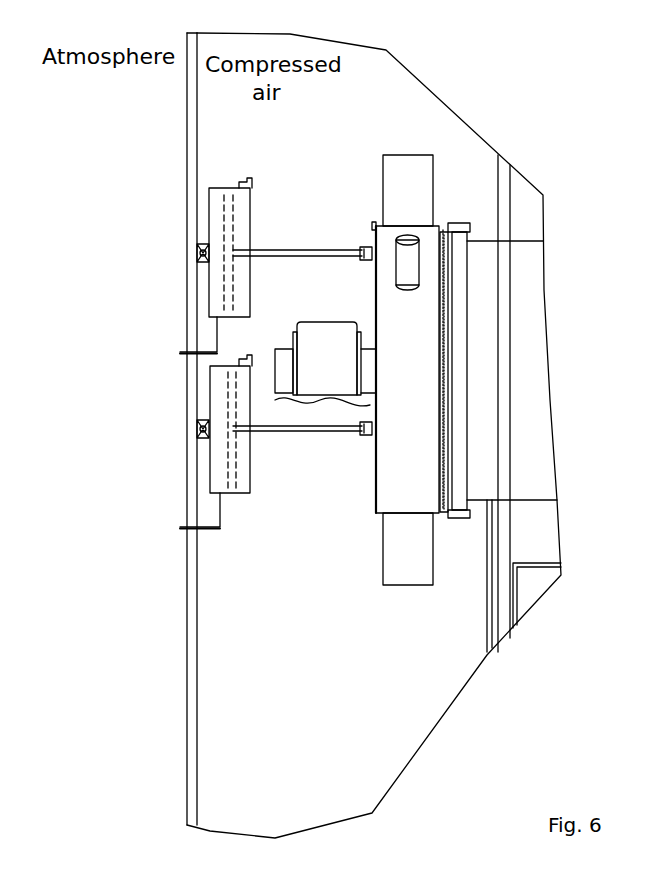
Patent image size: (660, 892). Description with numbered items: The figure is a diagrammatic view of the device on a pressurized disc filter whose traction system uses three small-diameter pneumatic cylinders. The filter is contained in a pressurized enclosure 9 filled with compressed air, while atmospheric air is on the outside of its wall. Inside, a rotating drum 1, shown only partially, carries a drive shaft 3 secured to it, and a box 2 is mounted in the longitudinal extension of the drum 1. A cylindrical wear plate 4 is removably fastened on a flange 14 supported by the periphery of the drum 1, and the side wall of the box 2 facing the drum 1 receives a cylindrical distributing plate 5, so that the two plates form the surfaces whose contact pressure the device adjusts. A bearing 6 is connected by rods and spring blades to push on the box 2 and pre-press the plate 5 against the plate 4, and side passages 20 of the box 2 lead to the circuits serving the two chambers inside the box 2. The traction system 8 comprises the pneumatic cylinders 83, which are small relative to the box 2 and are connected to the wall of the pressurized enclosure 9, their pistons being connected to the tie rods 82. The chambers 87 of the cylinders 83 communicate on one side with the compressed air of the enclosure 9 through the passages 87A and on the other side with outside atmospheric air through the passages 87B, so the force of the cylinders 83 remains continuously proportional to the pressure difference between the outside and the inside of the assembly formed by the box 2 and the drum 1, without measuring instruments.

The rotating drum 1 is at (530, 464).
The box 2 is at (400, 481).
The drive shaft 3 is at (283, 365).
The wear plate 4 is at (460, 519).
The distributing plate 5 is at (447, 228).
The bearing 6 is at (322, 340).
The traction system 8 is at (275, 210).
The pressurized enclosure 9 is at (189, 201).
The flange 14 is at (465, 236).
The side passages 20 is at (397, 170).
The tie rods 82 is at (305, 256).
The pneumatic cylinders 83 is at (210, 316).
The chambers 87 is at (243, 467).
The passages 87A is at (243, 184).
The passages 87B is at (205, 530).